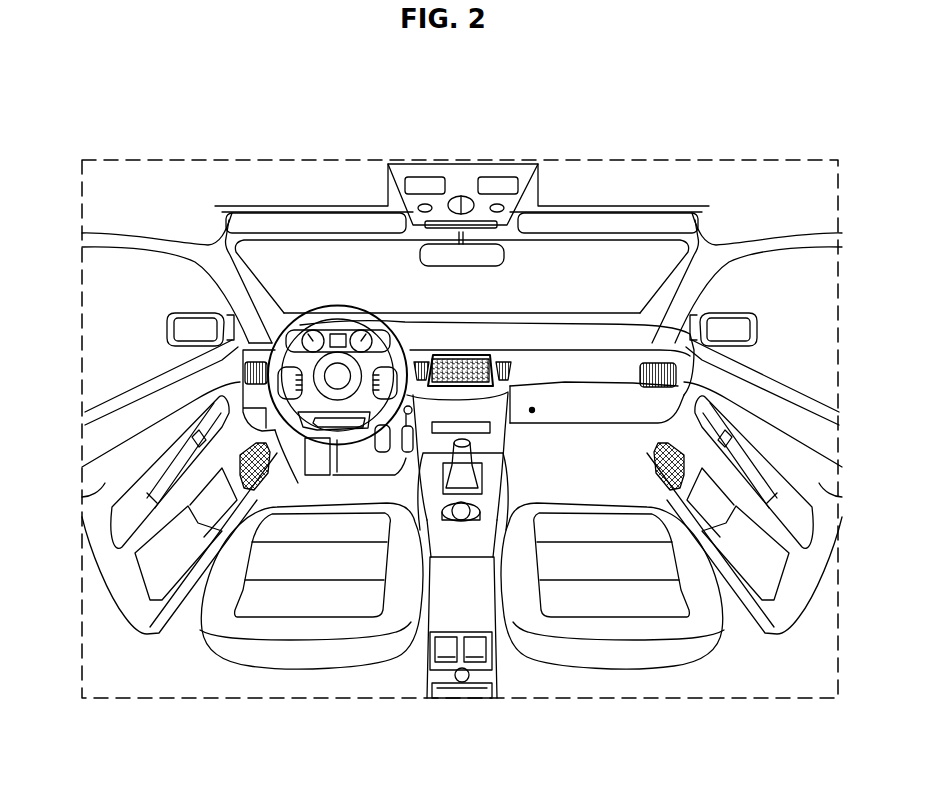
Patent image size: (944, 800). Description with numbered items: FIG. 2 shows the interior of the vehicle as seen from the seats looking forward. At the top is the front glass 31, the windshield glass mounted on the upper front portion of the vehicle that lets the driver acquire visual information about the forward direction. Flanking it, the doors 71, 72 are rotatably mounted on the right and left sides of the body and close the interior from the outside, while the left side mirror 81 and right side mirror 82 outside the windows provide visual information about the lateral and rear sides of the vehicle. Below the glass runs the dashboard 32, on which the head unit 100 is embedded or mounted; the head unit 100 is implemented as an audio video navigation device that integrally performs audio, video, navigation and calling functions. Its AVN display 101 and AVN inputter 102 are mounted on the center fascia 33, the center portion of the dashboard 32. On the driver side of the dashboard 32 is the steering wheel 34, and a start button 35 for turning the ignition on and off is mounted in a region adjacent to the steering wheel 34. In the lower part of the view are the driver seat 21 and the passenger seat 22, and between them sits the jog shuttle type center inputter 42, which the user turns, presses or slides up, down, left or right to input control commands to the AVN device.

The driver seat 21 is at (302, 633).
The passenger seat 22 is at (622, 633).
The front glass 31 is at (630, 240).
The dashboard 32 is at (589, 332).
The center fascia 33 is at (453, 348).
The steering wheel 34 is at (385, 323).
The start button 35 is at (403, 452).
The center inputter 42 is at (480, 512).
The door 71 is at (102, 488).
The door 72 is at (822, 488).
The left side mirror 81 is at (167, 333).
The right side mirror 82 is at (757, 333).
The head unit 100 is at (465, 356).
The AVN display 101 is at (437, 355).
The AVN inputter 102 is at (488, 356).